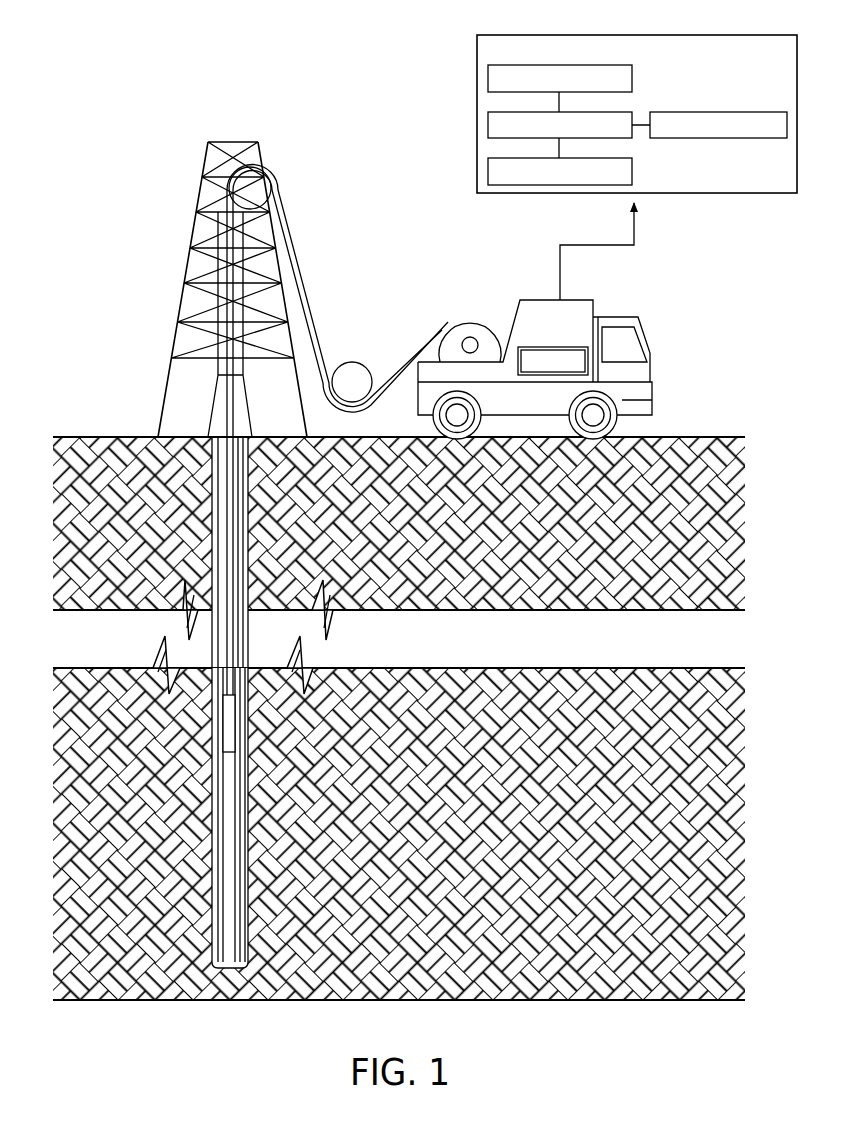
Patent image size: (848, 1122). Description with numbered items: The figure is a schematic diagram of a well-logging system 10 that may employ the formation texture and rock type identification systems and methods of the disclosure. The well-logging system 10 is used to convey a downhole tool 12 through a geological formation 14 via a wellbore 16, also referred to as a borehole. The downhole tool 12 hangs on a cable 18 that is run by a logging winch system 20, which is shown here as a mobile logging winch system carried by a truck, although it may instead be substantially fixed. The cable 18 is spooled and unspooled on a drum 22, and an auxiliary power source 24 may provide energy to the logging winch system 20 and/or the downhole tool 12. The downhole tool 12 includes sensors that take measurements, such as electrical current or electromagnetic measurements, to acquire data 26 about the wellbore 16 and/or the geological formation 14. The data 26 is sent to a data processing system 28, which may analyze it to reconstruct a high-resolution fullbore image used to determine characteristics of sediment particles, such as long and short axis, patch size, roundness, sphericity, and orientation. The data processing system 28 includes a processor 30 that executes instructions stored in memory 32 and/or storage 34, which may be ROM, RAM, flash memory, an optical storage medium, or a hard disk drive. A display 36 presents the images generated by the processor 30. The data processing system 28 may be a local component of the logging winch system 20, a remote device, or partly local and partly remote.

The well-logging system 10 is at (126, 193).
The downhole tool 12 is at (217, 722).
The geological formation 14 is at (67, 777).
The wellbore 16 is at (206, 492).
The cable 18 is at (314, 281).
The logging winch system 20 is at (541, 298).
The drum 22 is at (459, 314).
The auxiliary power source 24 is at (538, 347).
The data 26 is at (637, 242).
The data processing system 28 is at (638, 35).
The processor 30 is at (612, 110).
The memory 32 is at (488, 78).
The storage 34 is at (632, 172).
The display 36 is at (718, 112).